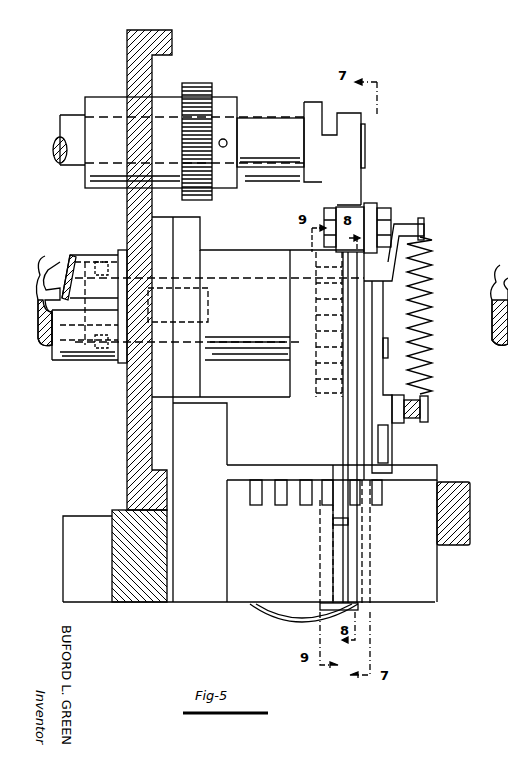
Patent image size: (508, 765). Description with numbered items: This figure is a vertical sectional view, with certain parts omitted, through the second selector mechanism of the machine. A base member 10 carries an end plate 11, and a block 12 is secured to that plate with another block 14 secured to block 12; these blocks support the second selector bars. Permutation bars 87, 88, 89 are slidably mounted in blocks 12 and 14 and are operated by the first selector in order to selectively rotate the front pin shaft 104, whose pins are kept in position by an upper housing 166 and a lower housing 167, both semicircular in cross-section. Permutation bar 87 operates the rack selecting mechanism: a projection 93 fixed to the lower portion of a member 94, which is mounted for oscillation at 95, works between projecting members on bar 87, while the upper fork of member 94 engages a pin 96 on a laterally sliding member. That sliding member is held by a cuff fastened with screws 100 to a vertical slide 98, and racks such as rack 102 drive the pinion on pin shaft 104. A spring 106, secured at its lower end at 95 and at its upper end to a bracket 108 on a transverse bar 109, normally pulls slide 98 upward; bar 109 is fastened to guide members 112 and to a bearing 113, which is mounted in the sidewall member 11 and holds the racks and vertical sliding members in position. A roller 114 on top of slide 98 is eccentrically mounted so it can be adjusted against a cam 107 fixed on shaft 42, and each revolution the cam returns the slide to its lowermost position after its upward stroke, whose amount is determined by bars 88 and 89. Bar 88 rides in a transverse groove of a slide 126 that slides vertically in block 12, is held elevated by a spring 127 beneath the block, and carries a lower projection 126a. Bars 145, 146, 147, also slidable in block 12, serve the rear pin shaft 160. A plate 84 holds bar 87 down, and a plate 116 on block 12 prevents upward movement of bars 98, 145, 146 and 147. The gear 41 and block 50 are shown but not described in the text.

The base member 10 is at (80, 516).
The end plate 11 is at (128, 40).
The block 12 is at (201, 409).
The block 14 is at (425, 592).
The gear 41 is at (195, 83).
The shaft 42 is at (60, 124).
The block 50 is at (470, 517).
The plate 84 is at (438, 471).
The permutation bar 87 is at (384, 493).
The permutation bar 88 is at (362, 500).
The permutation bar 89 is at (325, 505).
The projection 93 is at (388, 451).
The member 94 is at (385, 420).
The oscillation mounting 95 is at (428, 408).
The pin 96 is at (388, 348).
The vertical slide 98 is at (375, 206).
The screws 100 is at (365, 320).
The rack 102 is at (300, 329).
The pin shaft 104 is at (44, 286).
The spring 106 is at (432, 352).
The cam 107 is at (352, 128).
The bracket 108 is at (401, 224).
The transverse bar 109 is at (382, 282).
The guide members 112 is at (342, 400).
The bearing 113 is at (258, 307).
The roller 114 is at (364, 202).
The plate 116 is at (262, 467).
The slide 126 is at (310, 425).
The projection 126a is at (360, 611).
The spring 127 is at (296, 619).
The bar 145 is at (302, 505).
The bar 146 is at (277, 505).
The bar 147 is at (250, 492).
The rear pin shaft 160 is at (492, 323).
The upper housing 166 is at (75, 256).
The lower housing 167 is at (50, 345).